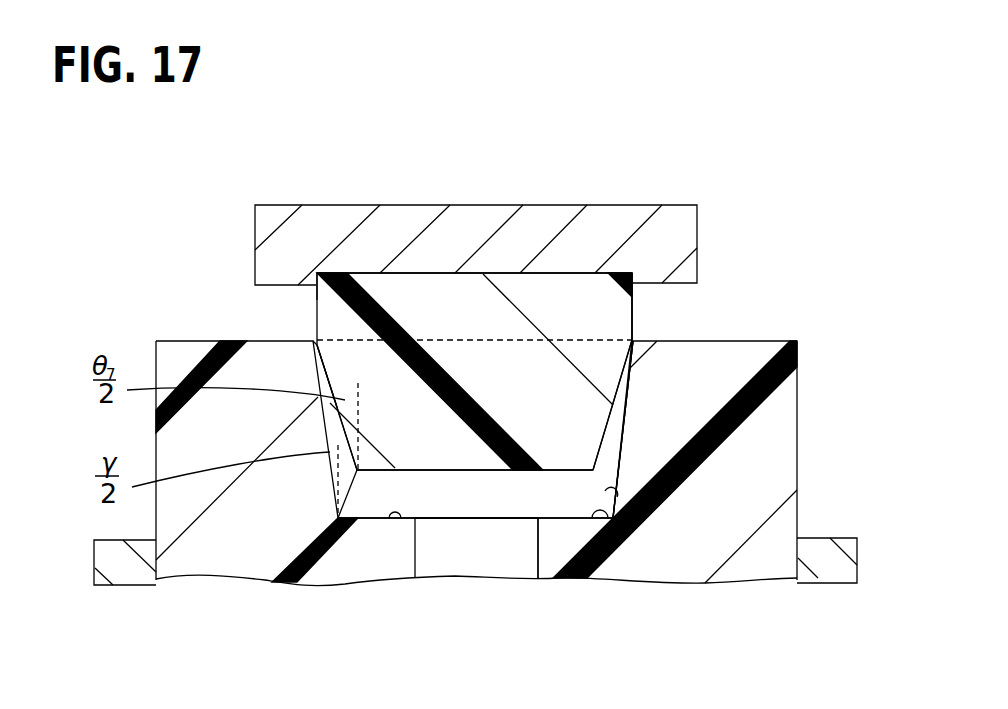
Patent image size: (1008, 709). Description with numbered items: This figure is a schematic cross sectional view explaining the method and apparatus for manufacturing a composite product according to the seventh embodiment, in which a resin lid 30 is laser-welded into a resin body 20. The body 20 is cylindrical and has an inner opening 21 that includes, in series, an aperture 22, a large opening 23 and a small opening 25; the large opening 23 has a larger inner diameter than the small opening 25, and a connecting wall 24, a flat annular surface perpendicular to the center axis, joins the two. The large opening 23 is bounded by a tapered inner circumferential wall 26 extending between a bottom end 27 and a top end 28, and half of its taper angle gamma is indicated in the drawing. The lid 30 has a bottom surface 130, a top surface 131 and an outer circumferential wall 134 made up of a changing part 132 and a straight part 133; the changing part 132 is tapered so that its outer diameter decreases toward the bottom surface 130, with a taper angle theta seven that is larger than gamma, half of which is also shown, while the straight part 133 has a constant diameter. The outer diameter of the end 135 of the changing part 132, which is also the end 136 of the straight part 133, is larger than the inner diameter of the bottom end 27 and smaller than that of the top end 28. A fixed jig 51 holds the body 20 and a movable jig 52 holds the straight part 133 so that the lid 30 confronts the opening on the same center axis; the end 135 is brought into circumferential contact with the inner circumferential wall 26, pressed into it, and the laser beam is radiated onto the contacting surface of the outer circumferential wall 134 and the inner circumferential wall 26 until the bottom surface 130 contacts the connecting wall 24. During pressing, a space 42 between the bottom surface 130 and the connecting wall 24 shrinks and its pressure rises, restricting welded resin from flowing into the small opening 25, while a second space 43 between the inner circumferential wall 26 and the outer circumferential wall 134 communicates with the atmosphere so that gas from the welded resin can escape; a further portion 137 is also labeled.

The body 20 is at (808, 453).
The inner opening 21 is at (550, 630).
The aperture 22 is at (515, 340).
The large opening 23 is at (500, 503).
The connecting wall 24 is at (390, 520).
The small opening 25 is at (523, 555).
The inner circumferential wall 26 is at (613, 502).
The bottom end 27 is at (600, 518).
The top end 28 is at (312, 342).
The lid 30 is at (616, 452).
The space 42 is at (373, 497).
The second space 43 is at (630, 345).
The fixed jig 51 is at (843, 570).
The movable jig 52 is at (683, 212).
The bottom surface 130 is at (430, 470).
The top surface 131 is at (425, 272).
The changing part 132 is at (613, 420).
The straight part 133 is at (633, 317).
The outer circumferential wall 134 is at (770, 248).
The end of the changing part 135 is at (313, 369).
The end of the straight part 136 is at (251, 339).
The corner portion 137 is at (317, 273).